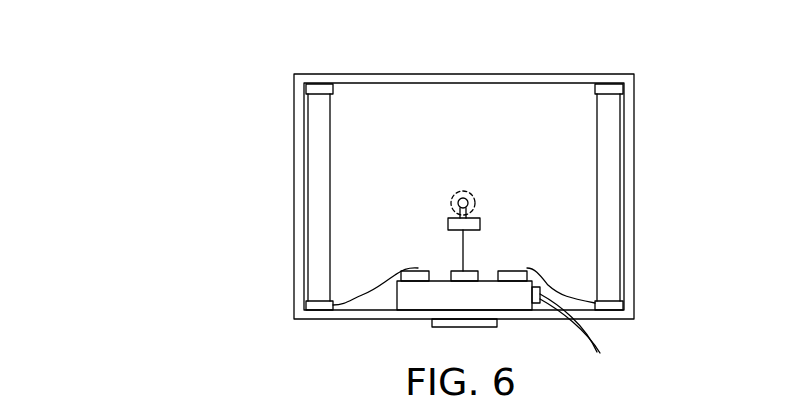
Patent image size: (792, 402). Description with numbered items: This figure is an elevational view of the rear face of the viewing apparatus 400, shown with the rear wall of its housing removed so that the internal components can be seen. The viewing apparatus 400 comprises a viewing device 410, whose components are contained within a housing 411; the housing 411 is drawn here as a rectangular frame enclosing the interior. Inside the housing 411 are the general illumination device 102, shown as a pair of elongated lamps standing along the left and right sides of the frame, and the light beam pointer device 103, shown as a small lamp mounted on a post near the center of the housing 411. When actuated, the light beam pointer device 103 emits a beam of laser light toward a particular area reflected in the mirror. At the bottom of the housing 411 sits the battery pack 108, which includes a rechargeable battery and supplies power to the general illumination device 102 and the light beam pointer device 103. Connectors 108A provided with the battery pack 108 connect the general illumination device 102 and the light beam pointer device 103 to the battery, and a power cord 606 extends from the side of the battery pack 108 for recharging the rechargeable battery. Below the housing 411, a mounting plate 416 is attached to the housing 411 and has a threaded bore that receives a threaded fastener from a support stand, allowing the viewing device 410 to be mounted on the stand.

The viewing apparatus 400 is at (524, 62).
The housing 411 is at (325, 74).
The viewing device 410 is at (630, 89).
The general illumination device 102 is at (320, 163).
The light beam pointer device 103 is at (480, 218).
The battery pack 108 is at (393, 295).
The connectors 108A is at (507, 268).
The mounting plate 416 is at (478, 327).
The power cord 606 is at (588, 336).